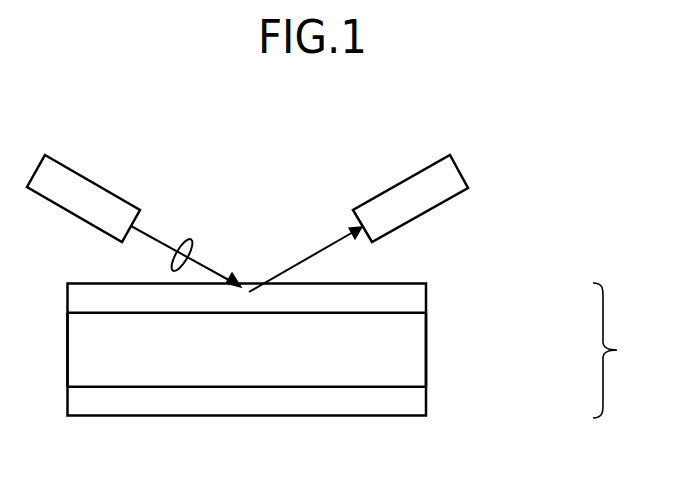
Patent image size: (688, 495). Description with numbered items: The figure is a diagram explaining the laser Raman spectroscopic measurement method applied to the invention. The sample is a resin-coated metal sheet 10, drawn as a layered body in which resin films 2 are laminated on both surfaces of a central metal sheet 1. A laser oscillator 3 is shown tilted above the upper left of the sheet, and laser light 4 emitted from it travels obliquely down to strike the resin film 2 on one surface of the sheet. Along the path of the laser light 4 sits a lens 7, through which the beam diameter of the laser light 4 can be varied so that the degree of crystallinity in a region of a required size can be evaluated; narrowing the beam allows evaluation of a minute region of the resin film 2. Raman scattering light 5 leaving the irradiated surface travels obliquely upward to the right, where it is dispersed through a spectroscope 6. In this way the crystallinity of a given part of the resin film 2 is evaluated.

The metal sheet 1 is at (413, 350).
The resin film 2 is at (413, 299).
The laser oscillator 3 is at (78, 172).
The laser light 4 is at (160, 237).
The Raman scattering light 5 is at (305, 257).
The spectroscope 6 is at (407, 178).
The lens 7 is at (190, 237).
The resin-coated metal sheet 10 is at (358, 350).